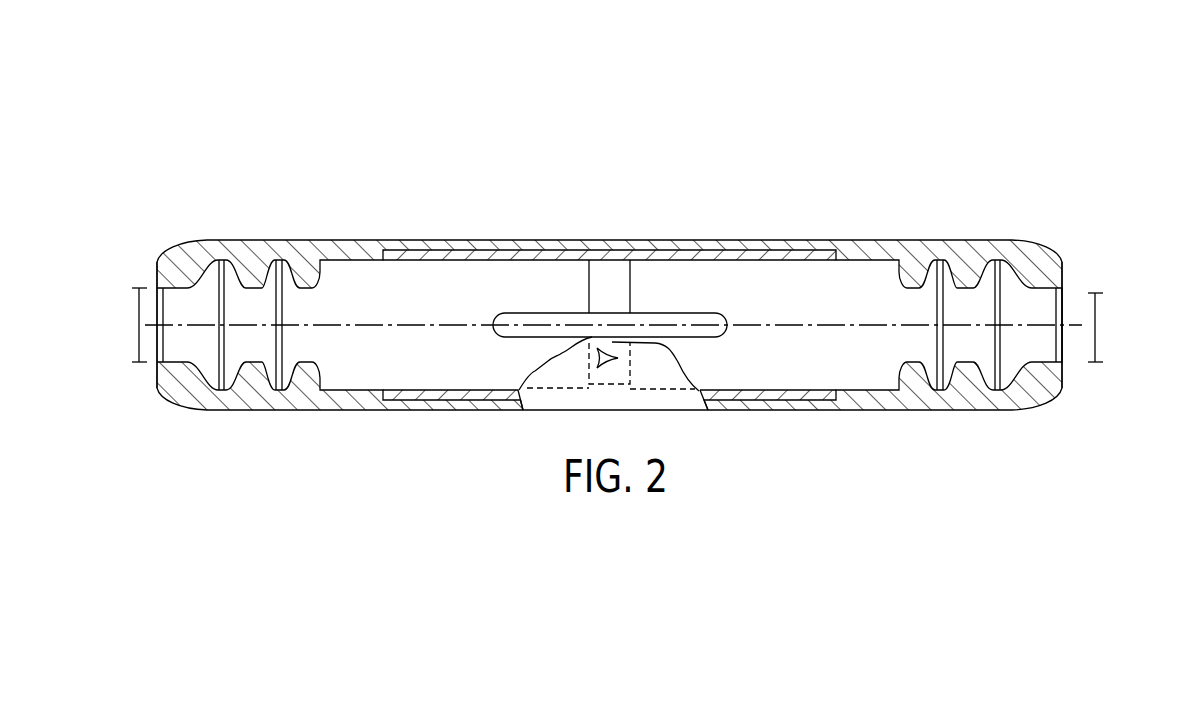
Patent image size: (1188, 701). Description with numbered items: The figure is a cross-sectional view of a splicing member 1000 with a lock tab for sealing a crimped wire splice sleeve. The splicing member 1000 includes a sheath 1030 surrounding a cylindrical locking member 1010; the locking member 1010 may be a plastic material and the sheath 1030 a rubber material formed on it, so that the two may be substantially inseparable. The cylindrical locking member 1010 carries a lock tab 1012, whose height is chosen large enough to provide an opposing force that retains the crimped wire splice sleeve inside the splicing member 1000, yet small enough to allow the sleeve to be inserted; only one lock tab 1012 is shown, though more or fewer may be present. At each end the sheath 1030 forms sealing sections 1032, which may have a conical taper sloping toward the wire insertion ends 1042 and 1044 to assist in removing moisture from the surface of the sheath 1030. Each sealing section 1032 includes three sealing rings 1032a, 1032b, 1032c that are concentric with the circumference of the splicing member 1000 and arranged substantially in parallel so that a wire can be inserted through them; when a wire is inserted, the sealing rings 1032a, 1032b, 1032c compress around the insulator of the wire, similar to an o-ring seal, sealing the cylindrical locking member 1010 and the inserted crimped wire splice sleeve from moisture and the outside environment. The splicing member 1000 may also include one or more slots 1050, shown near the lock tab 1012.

The splicing member 1000 is at (386, 98).
The cylindrical locking member 1010 is at (558, 242).
The lock tab 1012 is at (626, 265).
The sheath 1030 is at (448, 241).
The sealing sections 1032 is at (377, 215).
The sealing ring 1032a is at (203, 409).
The sealing ring 1032b is at (268, 409).
The sealing ring 1032c is at (320, 409).
The wire insertion end 1042 is at (1097, 327).
The wire insertion end 1044 is at (134, 315).
The slot 1050 is at (727, 321).